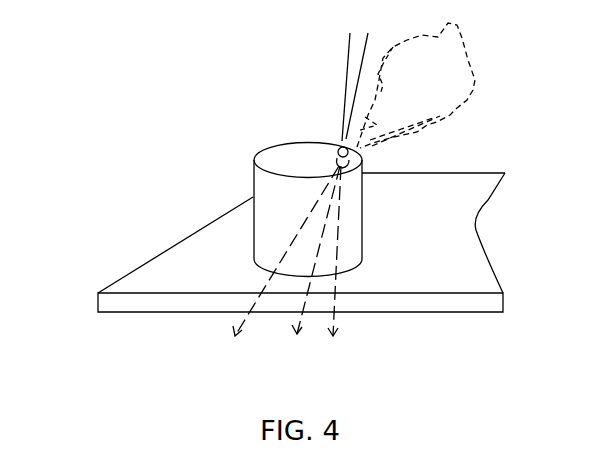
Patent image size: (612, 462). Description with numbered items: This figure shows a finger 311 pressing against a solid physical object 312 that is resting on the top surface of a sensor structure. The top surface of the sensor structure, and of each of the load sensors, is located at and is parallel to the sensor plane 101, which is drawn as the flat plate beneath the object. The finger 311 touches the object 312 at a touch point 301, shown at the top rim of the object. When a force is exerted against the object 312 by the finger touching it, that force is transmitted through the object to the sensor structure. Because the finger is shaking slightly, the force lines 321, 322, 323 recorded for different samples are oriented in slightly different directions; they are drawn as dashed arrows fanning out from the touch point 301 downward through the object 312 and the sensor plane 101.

The sensor plane 101 is at (132, 276).
The solid physical object 312 is at (255, 158).
The touch point 301 is at (324, 138).
The finger 311 is at (362, 149).
The force line 321 is at (335, 263).
The force line 322 is at (313, 263).
The force line 323 is at (283, 263).